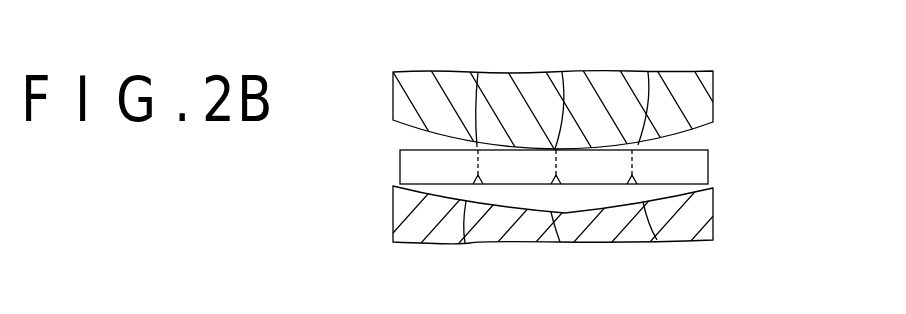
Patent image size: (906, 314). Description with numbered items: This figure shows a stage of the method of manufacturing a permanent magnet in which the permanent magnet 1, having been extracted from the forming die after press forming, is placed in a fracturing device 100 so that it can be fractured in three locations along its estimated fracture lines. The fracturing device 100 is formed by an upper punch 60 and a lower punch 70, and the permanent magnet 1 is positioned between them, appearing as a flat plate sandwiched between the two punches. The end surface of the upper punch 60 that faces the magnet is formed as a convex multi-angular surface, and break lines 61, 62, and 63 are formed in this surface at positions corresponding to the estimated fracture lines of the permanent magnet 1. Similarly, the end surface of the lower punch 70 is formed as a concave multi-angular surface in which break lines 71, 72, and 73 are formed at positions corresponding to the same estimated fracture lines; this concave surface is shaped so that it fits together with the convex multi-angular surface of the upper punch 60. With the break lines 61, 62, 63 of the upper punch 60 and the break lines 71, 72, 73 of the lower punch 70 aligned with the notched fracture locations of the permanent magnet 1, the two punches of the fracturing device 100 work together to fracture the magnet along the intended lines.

The fracturing device 100 is at (355, 168).
The upper punch 60 is at (688, 100).
The break line 61 is at (478, 72).
The break line 62 is at (562, 72).
The break line 63 is at (648, 72).
The permanent magnet 1 is at (690, 167).
The lower punch 70 is at (705, 207).
The break line 71 is at (465, 243).
The break line 72 is at (560, 242).
The break line 73 is at (657, 240).